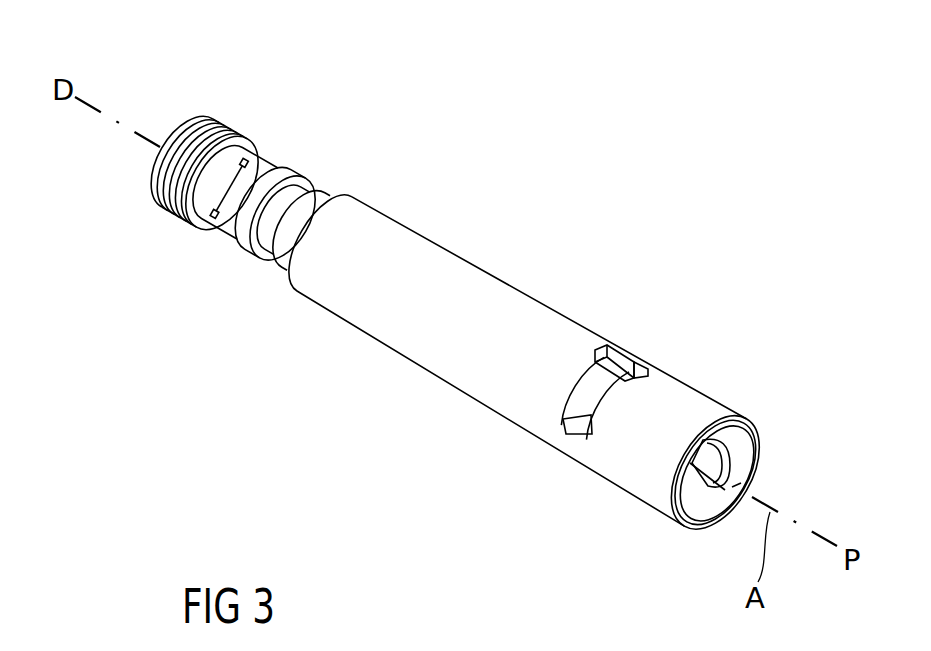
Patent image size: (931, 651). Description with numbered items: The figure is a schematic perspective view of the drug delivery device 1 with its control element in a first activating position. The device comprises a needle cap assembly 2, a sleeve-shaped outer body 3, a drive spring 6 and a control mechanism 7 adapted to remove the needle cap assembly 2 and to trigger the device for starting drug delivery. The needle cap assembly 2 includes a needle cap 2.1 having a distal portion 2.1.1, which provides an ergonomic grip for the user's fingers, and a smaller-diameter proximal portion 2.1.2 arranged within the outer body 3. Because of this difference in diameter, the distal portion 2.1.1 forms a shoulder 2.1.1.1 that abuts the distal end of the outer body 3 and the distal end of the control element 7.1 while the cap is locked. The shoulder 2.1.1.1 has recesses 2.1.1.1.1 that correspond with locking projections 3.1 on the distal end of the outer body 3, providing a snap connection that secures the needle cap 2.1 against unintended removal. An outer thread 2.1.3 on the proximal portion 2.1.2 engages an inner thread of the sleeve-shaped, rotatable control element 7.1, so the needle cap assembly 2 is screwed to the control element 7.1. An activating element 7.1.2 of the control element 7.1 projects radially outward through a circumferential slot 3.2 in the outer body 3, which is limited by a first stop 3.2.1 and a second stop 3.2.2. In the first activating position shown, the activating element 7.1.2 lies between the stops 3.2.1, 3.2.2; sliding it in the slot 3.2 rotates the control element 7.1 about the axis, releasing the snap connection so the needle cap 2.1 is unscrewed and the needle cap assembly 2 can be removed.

The drug delivery device 1 is at (548, 197).
The needle cap assembly 2 is at (188, 110).
The needle cap 2.1 is at (213, 113).
The distal portion 2.1.1 is at (175, 203).
The shoulder 2.1.1.1 is at (262, 157).
The recesses 2.1.1.1.1 is at (215, 217).
The proximal portion 2.1.2 is at (297, 193).
The outer thread 2.1.3 is at (232, 233).
The outer body 3 is at (480, 380).
The locking projections 3.1 is at (292, 268).
The slot 3.2 is at (648, 400).
The first stop 3.2.1 is at (575, 442).
The second stop 3.2.2 is at (650, 373).
The drive spring 6 is at (680, 515).
The control mechanism 7 is at (605, 335).
The control element 7.1 is at (583, 408).
The activating element 7.1.2 is at (622, 358).